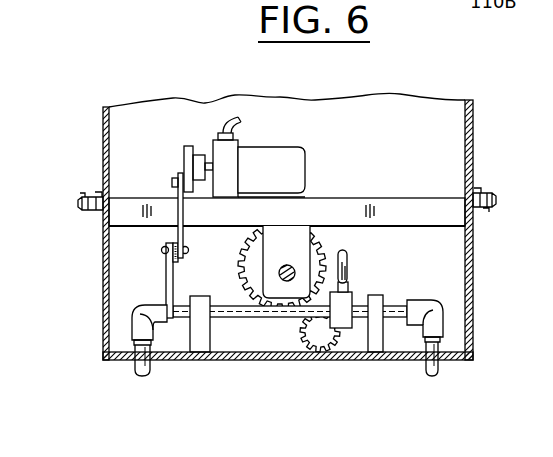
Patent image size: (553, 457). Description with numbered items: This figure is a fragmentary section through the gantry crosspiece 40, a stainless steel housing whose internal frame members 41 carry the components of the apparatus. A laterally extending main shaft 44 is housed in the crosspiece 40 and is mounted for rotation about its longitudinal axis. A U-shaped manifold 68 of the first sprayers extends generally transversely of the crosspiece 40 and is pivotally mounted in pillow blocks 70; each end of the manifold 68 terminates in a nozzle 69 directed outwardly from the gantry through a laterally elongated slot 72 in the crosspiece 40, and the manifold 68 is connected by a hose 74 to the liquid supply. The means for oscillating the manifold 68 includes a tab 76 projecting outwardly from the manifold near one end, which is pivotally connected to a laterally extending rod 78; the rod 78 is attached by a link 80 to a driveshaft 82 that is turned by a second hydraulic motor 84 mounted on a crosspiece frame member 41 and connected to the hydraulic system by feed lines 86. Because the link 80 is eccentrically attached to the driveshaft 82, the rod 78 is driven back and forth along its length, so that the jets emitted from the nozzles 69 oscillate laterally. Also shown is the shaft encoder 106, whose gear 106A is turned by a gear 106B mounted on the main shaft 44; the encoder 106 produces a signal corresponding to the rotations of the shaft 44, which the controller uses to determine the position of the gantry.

The crosspiece 40 is at (476, 137).
The internal frame members 41 is at (412, 210).
The main shaft 44 is at (280, 267).
The U-shaped manifold 68 is at (398, 305).
The nozzle 69 is at (130, 368).
The pillow block 70 is at (288, 240).
The laterally elongated slot 72 is at (153, 360).
The hose 74 is at (345, 263).
The tab 76 is at (165, 278).
The rod 78 is at (170, 243).
The link 80 is at (178, 192).
The driveshaft 82 is at (200, 155).
The second hydraulic motor 84 is at (270, 158).
The feed lines 86 is at (226, 133).
The shaft encoder 106 is at (358, 300).
The gear 106A is at (315, 335).
The gear 106B is at (243, 262).